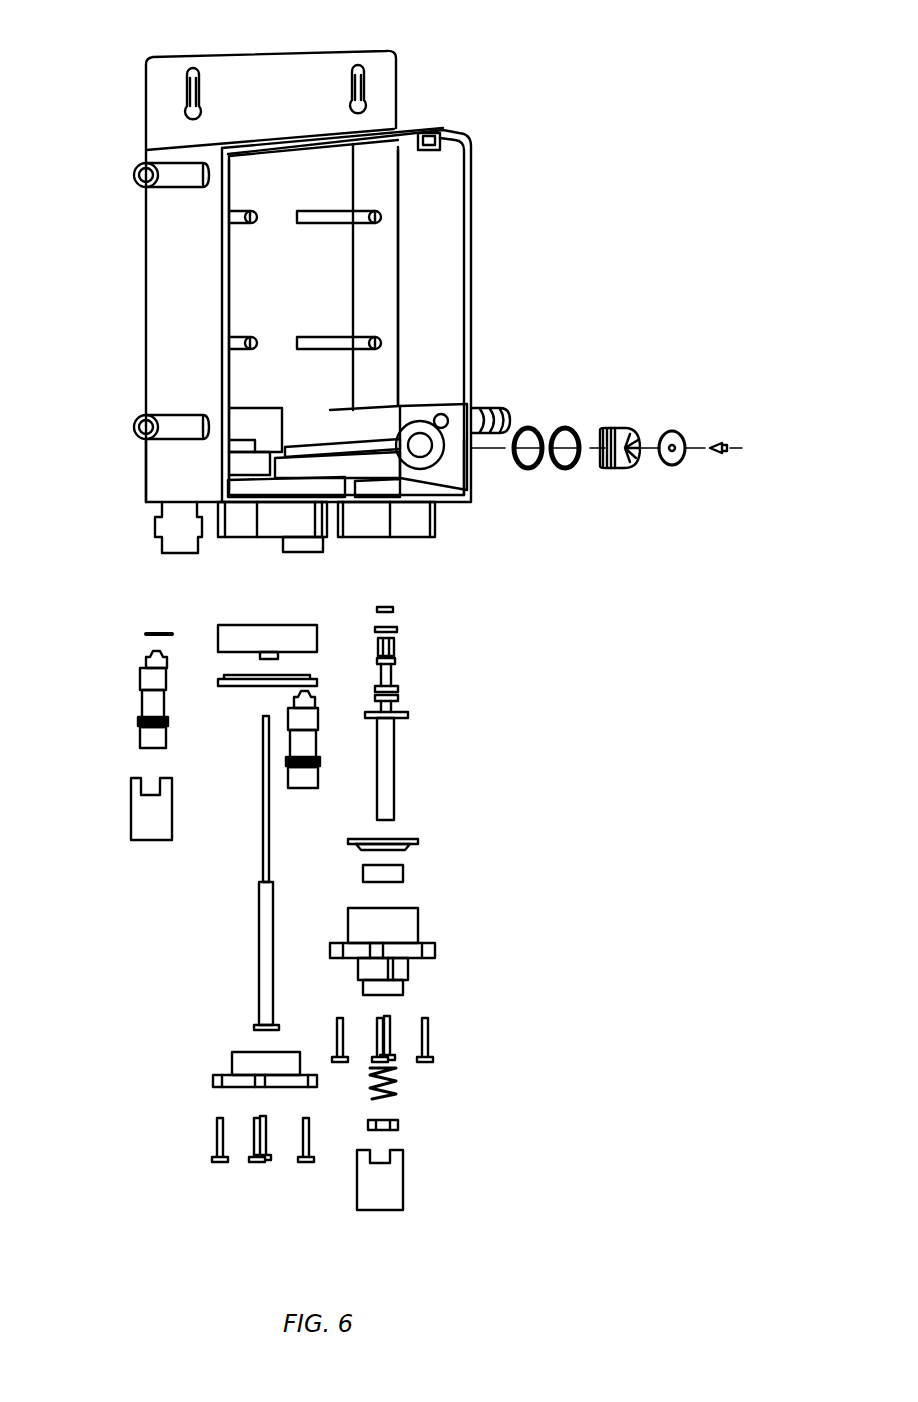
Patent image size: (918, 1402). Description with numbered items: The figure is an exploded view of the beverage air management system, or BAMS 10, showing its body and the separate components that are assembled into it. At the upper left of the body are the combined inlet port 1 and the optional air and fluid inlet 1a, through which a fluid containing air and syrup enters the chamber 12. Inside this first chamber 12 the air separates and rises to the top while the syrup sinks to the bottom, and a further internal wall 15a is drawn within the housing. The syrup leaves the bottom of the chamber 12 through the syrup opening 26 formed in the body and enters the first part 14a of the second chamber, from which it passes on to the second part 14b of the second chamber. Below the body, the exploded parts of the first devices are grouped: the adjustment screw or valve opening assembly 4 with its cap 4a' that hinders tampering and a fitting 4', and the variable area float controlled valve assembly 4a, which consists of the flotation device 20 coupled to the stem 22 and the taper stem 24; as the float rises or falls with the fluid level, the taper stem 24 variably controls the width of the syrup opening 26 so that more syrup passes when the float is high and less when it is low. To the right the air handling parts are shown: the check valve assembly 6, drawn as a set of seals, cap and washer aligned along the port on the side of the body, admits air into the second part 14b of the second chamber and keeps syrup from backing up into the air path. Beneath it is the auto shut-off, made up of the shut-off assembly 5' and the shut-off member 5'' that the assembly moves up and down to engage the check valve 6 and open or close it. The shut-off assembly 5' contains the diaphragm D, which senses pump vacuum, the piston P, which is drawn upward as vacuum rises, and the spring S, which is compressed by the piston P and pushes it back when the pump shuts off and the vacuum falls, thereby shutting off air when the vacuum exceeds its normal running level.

The Beverage Air Management System (BAMS) 10 is at (535, 130).
The optional air and fluid inlet 1a is at (172, 181).
The combined inlet port 1 is at (172, 428).
The chamber 12 is at (241, 318).
The inner partition wall 15a is at (390, 286).
The first part of second chamber 14a is at (152, 491).
The second part of second chamber 14b is at (468, 500).
The syrup opening 26 is at (274, 402).
The check valve and associated assembly 6 is at (720, 490).
The air/syrup vacuum ratio adjustment screw or valve opening assembly 4 is at (109, 711).
The fitting 4' is at (131, 699).
The cap 4a' is at (124, 841).
The variable area float controlled valve and associated assembly 4a is at (232, 866).
The flotation device 20 is at (242, 632).
The stem 22 is at (264, 830).
The taper stem 24 is at (273, 920).
The shut-off assembly 5' is at (402, 901).
The shut-off member 5'' is at (363, 655).
The piston P is at (388, 726).
The diaphragm D is at (408, 838).
The spring S is at (370, 1095).